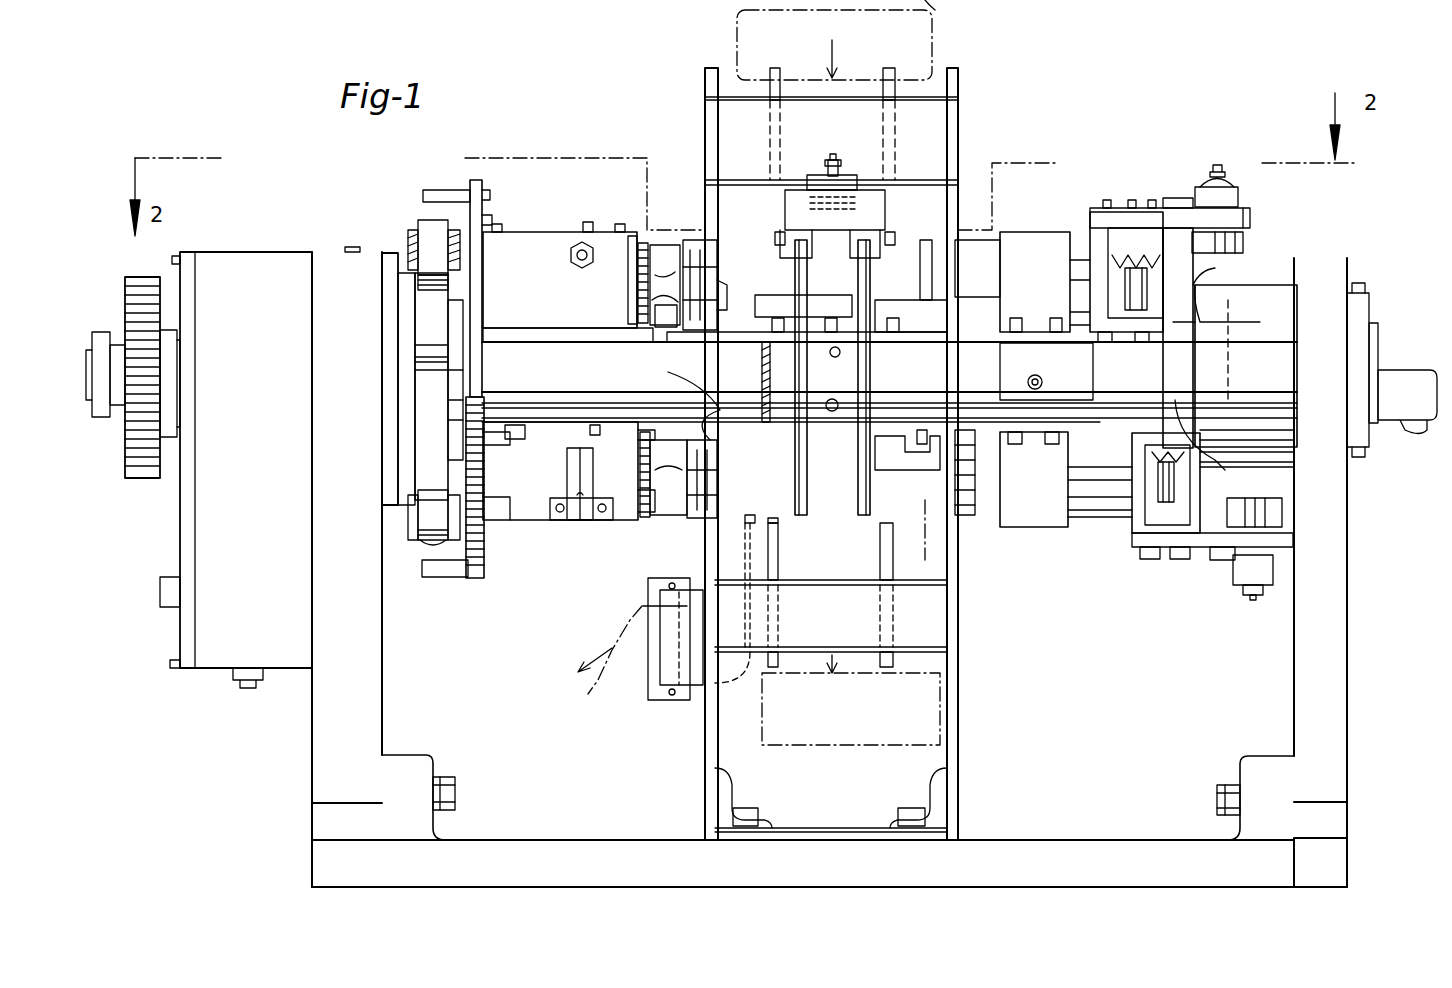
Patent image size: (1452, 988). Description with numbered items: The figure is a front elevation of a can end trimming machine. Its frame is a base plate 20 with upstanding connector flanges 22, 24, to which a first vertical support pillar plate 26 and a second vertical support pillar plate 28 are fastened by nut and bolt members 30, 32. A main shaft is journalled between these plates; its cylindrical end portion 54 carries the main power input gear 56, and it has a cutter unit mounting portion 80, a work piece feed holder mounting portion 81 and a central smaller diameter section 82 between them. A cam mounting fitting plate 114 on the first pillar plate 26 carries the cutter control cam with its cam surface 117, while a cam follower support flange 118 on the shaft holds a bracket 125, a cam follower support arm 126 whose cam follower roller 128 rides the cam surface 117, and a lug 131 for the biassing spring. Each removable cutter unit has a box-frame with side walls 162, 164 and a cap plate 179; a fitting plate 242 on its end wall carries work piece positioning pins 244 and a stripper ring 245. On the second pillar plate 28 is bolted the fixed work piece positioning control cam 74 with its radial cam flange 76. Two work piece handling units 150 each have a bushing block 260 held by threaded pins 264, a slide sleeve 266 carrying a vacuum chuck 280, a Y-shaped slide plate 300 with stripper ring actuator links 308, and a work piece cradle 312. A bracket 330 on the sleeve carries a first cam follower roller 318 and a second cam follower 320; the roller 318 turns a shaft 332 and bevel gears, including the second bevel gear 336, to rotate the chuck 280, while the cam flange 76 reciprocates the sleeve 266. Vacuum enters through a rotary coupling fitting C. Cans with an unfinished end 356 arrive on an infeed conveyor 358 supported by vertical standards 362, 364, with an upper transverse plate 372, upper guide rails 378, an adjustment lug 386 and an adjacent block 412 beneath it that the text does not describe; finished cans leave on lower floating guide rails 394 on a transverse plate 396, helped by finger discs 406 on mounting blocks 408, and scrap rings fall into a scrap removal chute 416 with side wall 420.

The base plate 20 is at (645, 840).
The first vertical connector flange 22 is at (420, 758).
The second vertical connector flange 24 is at (1232, 760).
The first vertical support pillar plate 26 is at (312, 775).
The second vertical support pillar plate 28 is at (1347, 668).
The nut and bolt member 30 is at (455, 780).
The nut and bolt member 32 is at (1217, 815).
The cylindrical end portion 54 is at (103, 332).
The main power input gear 56 is at (143, 478).
The work piece positioning control cam 74 is at (1268, 367).
The radial cam flange 76 is at (1210, 324).
The cutter unit mounting portion 80 is at (585, 366).
The work piece feed holder mounting portion 81 is at (1055, 367).
The central smaller diameter section 82 is at (762, 357).
The cam mounting fitting plate 114 is at (397, 252).
The cam surface 117 is at (418, 307).
The cam follower support flange 118 is at (482, 212).
The bracket 125 is at (540, 481).
The cam follower support arm 126 is at (412, 230).
The cam follower roller 128 is at (430, 220).
The lug 131 is at (460, 190).
The work piece handling unit 150 is at (1076, 196).
The first side wall 162 is at (620, 452).
The second side wall 164 is at (540, 283).
The cap plate 179 is at (588, 232).
The fitting plate 242 is at (634, 232).
The work piece positioning pins 244 is at (690, 240).
The stripper ring 245 is at (652, 262).
The bushing block 260 is at (1050, 262).
The threaded pins 264 is at (1055, 318).
The slide sleeve 266 is at (990, 280).
The vacuum chuck 280 is at (925, 240).
The Y-shaped slide plate 300 is at (925, 332).
The stripper ring actuator link 308 is at (655, 315).
The work piece cradle 312 is at (775, 295).
The first cam follower roller 318 is at (1090, 235).
The second cam follower 320 is at (1243, 243).
The bracket 330 is at (1250, 215).
The shaft 332 is at (1170, 285).
The second bevel gear 336 is at (1155, 467).
The unfinished end 356 is at (735, 40).
The infeed conveyor 358 is at (682, 124).
The first vertical standard 362 is at (705, 192).
The second vertical standard 364 is at (958, 90).
The upper transverse plate 372 is at (846, 134).
The upper guide rails 378 is at (795, 58).
The adjustment lug 386 is at (833, 158).
The lower floating guide rails 394 is at (778, 566).
The transverse plate 396 is at (845, 625).
The finger discs 406 is at (872, 357).
The mounting blocks 408 is at (843, 378).
The block 412 is at (835, 216).
The scrap removal chute 416 is at (648, 603).
The side wall 420 is at (778, 535).
The rotary coupling fitting C is at (1418, 380).